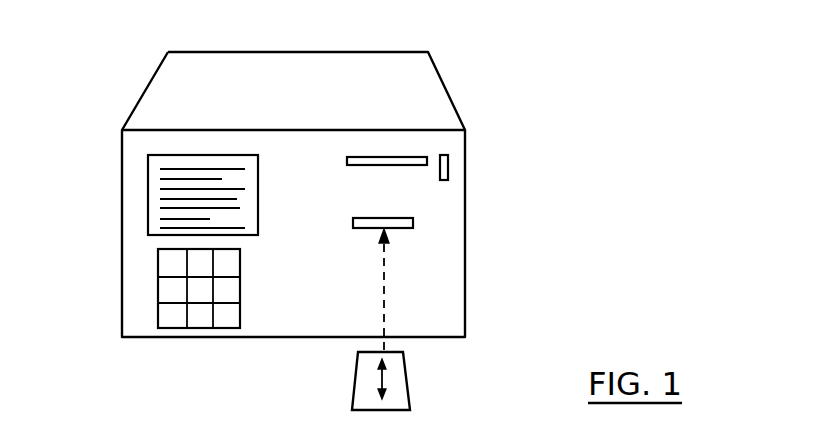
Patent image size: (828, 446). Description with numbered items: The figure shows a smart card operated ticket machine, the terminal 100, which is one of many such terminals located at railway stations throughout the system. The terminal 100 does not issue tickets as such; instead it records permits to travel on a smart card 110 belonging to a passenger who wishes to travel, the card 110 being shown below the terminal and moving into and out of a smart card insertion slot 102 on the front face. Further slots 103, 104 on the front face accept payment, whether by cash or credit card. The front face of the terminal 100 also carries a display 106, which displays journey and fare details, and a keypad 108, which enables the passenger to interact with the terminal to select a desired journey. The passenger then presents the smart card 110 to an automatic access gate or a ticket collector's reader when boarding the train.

The terminal 100 is at (122, 99).
The smart card insertion slot 102 is at (413, 220).
The slot 103 is at (388, 157).
The slot 104 is at (450, 168).
The display 106 is at (149, 189).
The keypad 108 is at (184, 267).
The smart card 110 is at (356, 378).